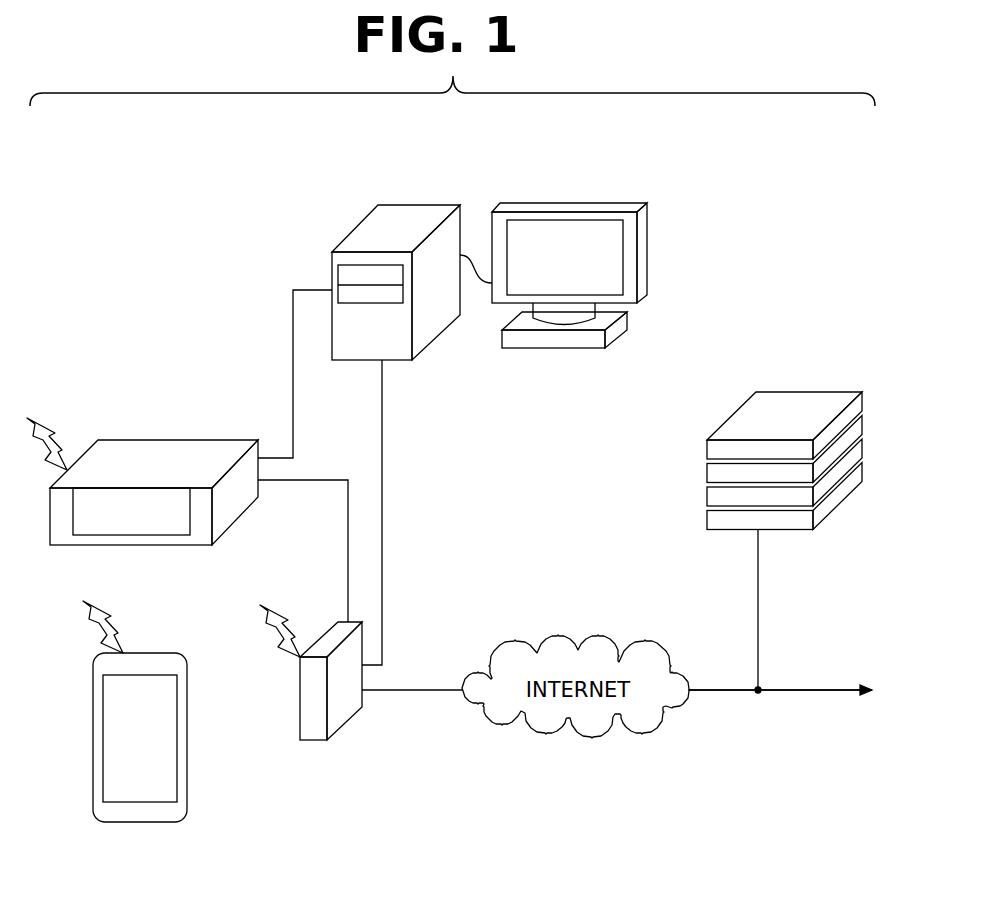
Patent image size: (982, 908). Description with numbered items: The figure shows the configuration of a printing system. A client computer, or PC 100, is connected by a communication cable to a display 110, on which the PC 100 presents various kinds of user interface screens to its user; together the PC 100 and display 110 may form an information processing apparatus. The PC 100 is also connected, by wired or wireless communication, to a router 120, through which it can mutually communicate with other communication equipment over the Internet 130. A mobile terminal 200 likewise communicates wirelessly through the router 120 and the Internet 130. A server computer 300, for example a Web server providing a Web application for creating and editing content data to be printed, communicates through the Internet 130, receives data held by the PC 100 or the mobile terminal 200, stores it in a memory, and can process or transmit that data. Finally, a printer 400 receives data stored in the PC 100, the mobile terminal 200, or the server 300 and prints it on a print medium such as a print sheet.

The client computer 100 is at (409, 201).
The display 110 is at (562, 203).
The router 120 is at (310, 740).
The Internet 130 is at (826, 690).
The mobile terminal 200 is at (93, 737).
The server computer 300 is at (795, 390).
The printer 400 is at (170, 440).